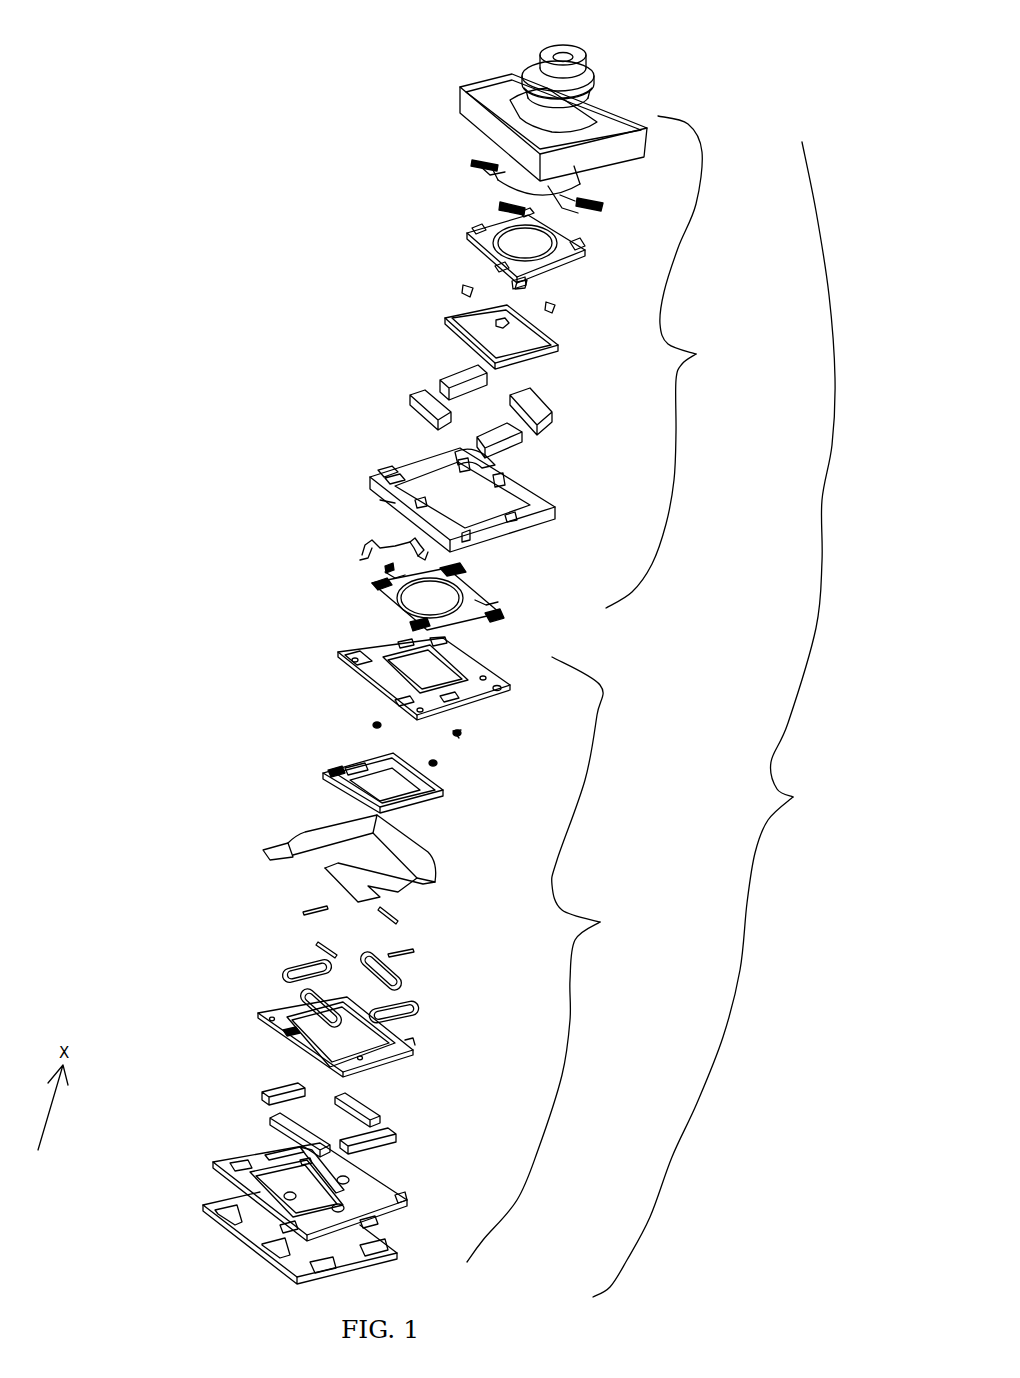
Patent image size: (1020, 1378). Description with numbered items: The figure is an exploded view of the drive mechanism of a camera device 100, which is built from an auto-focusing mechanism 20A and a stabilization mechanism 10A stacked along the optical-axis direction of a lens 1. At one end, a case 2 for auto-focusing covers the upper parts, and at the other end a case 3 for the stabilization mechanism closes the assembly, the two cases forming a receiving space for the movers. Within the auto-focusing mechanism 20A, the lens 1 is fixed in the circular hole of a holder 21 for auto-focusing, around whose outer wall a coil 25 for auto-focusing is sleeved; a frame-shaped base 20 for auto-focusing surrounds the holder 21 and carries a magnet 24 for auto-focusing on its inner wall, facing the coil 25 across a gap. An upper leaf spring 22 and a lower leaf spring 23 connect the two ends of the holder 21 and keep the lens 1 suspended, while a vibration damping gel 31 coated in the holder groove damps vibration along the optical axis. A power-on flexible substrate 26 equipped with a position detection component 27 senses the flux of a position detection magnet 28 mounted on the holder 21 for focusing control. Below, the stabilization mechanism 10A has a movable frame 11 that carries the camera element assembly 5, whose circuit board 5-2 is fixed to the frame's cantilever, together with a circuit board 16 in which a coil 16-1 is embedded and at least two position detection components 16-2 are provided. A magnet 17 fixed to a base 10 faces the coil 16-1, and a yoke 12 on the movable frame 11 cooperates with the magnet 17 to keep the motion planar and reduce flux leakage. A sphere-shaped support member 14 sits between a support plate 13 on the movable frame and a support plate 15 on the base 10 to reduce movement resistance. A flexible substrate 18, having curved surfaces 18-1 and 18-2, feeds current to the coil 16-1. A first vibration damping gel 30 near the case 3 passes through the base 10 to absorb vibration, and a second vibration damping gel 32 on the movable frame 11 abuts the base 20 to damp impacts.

The lens 1 is at (543, 63).
The case for auto-focusing 2 is at (618, 118).
The upper leaf spring for auto-focusing 22 is at (478, 163).
The holder for auto-focusing 21 is at (580, 255).
The vibration damping gel for auto-focusing 31 is at (465, 290).
The coil for auto-focusing 25 is at (557, 341).
The magnet for auto-focusing 24 is at (446, 370).
The base for auto-focusing 20 is at (546, 506).
The power-on flexible substrate for auto-focusing 26 is at (393, 546).
The position detection magnet for auto-focusing 28 is at (412, 542).
The position detection component for auto-focusing 27 is at (386, 570).
The lower leaf spring for auto-focusing 23 is at (478, 612).
The movable frame for the stabilization mechanism 11 is at (455, 680).
The second vibration damping gel for the stabilization mechanism 32 is at (400, 712).
The support plate (for the movable frame) of the support member 13 is at (462, 732).
The support member for the stabilization mechanism 14 is at (465, 736).
The support plate (for the base) of the support member 15 is at (459, 736).
The camera element assembly 5 is at (420, 803).
The circuit board 5-2 is at (352, 762).
The flexible substrate for the stabilization mechanism 18 is at (280, 845).
The curved surface B of the flexible substrate 18-2 is at (330, 832).
The curved surface A of the flexible substrate 18-1 is at (426, 862).
The yoke for the stabilization mechanism 12 is at (300, 910).
The circuit board for the stabilization mechanism 16 is at (400, 1050).
The coil for the stabilization mechanism 16-1 is at (415, 1003).
The position detection components for the stabilization mechanism 16-2 is at (290, 1030).
The magnet for the stabilization mechanism 17 is at (285, 1092).
The base for the stabilization mechanism 10 is at (375, 1195).
The first vibration damping gel for the stabilization mechanism 30 is at (290, 1153).
The case for the stabilization mechanism 3 is at (383, 1257).
The auto-focusing mechanism 20A is at (671, 362).
The stabilization mechanism 10A is at (555, 959).
The camera device 100 is at (714, 719).